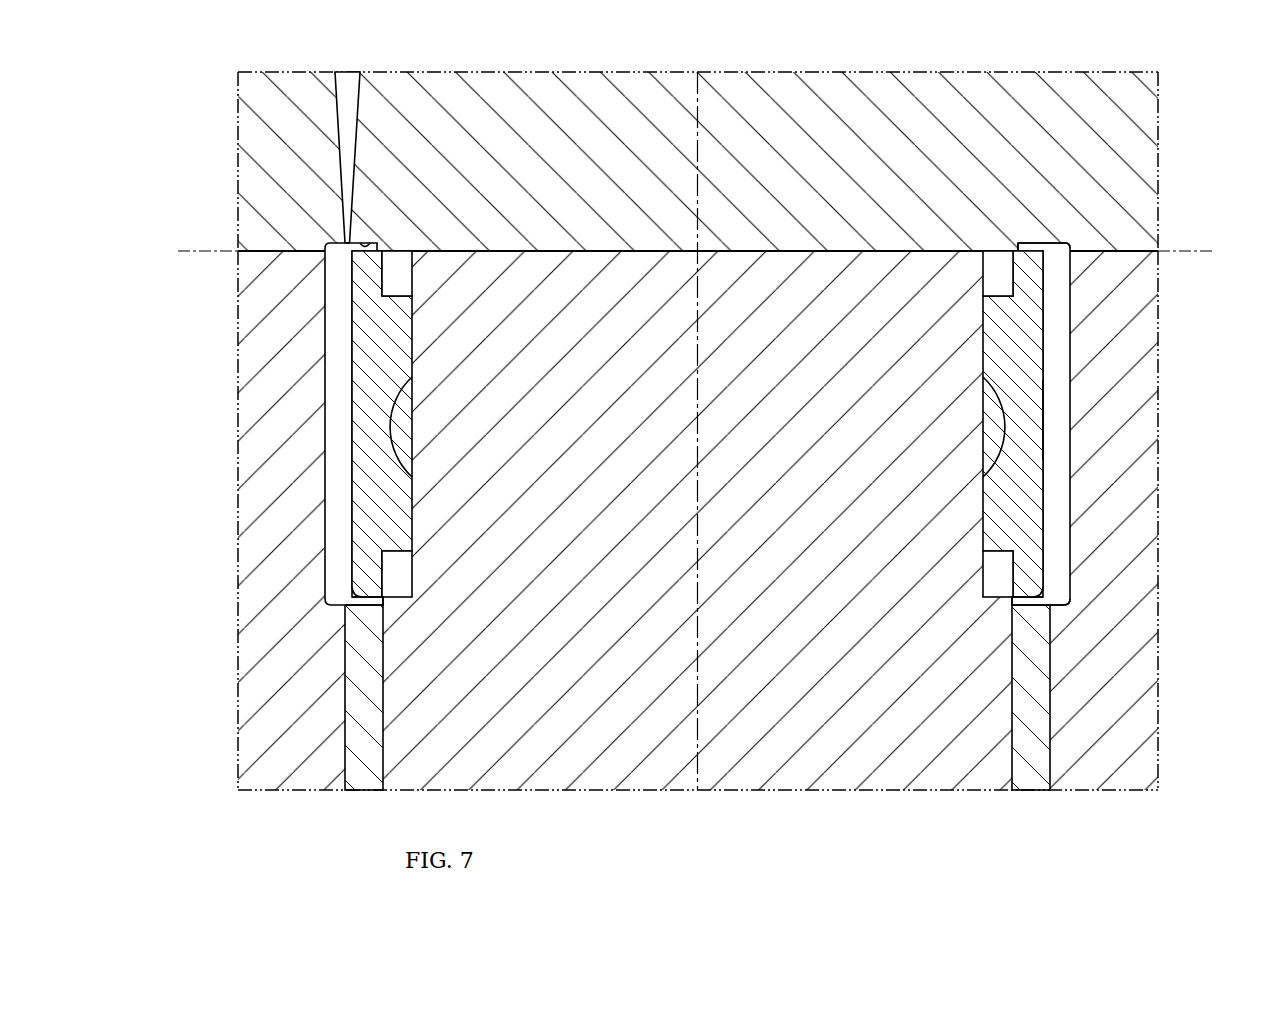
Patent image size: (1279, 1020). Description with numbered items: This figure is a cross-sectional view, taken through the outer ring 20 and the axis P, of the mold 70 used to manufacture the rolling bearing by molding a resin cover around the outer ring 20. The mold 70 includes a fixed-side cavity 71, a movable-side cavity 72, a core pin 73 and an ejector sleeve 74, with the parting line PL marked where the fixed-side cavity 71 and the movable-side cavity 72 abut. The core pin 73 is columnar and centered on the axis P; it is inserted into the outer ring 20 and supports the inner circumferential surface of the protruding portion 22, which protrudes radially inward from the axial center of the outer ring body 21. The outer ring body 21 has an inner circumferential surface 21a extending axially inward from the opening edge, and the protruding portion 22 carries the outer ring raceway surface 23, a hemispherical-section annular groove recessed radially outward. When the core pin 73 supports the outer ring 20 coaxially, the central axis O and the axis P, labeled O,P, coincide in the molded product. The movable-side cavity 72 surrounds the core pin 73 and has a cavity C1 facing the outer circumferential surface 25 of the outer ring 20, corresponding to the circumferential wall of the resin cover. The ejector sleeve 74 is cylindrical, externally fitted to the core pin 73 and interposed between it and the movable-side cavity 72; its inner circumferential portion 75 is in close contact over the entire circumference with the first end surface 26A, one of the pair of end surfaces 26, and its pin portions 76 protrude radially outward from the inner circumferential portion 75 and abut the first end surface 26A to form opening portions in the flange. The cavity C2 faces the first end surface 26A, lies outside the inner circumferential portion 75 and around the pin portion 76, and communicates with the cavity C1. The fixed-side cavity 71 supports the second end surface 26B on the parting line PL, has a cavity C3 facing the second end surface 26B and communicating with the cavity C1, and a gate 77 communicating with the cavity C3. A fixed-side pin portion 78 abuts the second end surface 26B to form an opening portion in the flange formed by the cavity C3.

The mold 70 is at (1180, 102).
The fixed-side cavity 71 is at (1143, 157).
The movable-side cavity 72 is at (242, 598).
The core pin 73 is at (892, 735).
The ejector sleeve 74 is at (1035, 703).
The inner circumferential portion 75 is at (385, 594).
The pin portion 76 is at (1032, 601).
The gate 77 is at (346, 240).
The fixed-side pin portion 78 is at (1053, 243).
The outer ring 20 is at (324, 319).
The outer ring body 21 is at (358, 268).
The inner circumferential surface 21a is at (387, 252).
The protruding portion 22 is at (393, 303).
The outer ring raceway surface 23 is at (398, 432).
The outer circumferential surface 25 is at (1045, 330).
The end surface 26 is at (1137, 420).
The first end surface 26A is at (1020, 607).
The second end surface 26B is at (1027, 243).
The cavity C1 is at (1058, 421).
The cavity C2 is at (368, 603).
The cavity C3 is at (347, 243).
The parting line PL is at (1180, 252).
The central axis and axis O,P is at (699, 108).